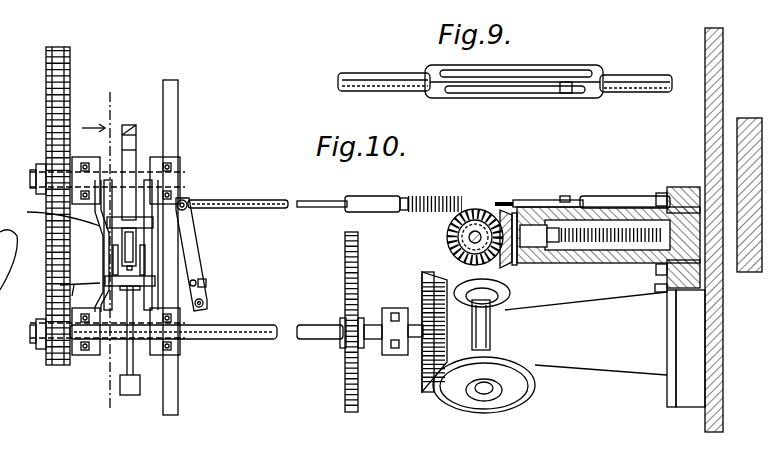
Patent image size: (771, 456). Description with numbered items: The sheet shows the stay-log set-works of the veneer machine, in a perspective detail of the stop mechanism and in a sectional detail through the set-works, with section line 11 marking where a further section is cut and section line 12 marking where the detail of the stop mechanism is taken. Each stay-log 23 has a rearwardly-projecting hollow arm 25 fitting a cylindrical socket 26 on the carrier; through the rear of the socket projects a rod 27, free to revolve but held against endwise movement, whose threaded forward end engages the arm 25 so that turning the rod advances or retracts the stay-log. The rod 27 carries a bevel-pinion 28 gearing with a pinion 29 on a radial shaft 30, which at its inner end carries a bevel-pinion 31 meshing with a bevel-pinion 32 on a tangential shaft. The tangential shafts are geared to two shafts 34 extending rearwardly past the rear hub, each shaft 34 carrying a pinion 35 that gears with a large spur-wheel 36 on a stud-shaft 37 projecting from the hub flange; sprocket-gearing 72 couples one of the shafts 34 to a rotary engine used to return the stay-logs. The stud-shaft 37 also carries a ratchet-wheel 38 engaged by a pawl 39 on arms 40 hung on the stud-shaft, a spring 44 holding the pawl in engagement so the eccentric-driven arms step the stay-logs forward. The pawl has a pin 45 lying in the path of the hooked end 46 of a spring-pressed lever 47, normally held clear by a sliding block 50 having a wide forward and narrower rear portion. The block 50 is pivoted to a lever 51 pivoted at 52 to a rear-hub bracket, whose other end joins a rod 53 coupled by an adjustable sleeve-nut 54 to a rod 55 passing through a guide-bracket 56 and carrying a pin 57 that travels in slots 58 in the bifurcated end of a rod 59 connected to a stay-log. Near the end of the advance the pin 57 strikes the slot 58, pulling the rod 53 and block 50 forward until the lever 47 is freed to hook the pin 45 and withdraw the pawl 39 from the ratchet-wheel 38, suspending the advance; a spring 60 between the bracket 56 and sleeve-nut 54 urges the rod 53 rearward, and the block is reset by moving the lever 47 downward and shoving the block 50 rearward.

In FIG. 10, the section line 11 is at (102, 257).
In FIG. 10, the section line 12 is at (208, 283).
In FIG. 10, the stay-log 23 is at (748, 118).
In FIG. 10, the hollow arm 25 is at (724, 272).
In FIG. 10, the socket 26 is at (606, 263).
In FIG. 10, the rod 27 is at (526, 263).
In FIG. 10, the bevel-pinion 28 is at (518, 210).
In FIG. 10, the pinion 29 is at (465, 233).
In FIG. 10, the radial shaft 30 is at (470, 243).
In FIG. 10, the bevel-pinion 31 is at (454, 255).
In FIG. 10, the bevel-pinion 32 is at (450, 262).
In FIG. 10, the shaft 34 is at (256, 339).
In FIG. 10, the pinion 35 is at (47, 362).
In FIG. 10, the spur-wheel 36 is at (46, 103).
In FIG. 10, the stud-shaft 37 is at (192, 247).
In FIG. 10, the ratchet-wheel 38 is at (135, 128).
In FIG. 10, the pawl 39 is at (132, 216).
In FIG. 10, the arms 40 is at (150, 236).
In FIG. 10, the spring 44 is at (153, 247).
In FIG. 10, the pin 45 is at (50, 210).
In FIG. 10, the hooked end 46 is at (155, 254).
In FIG. 10, the lever 47 is at (125, 305).
In FIG. 10, the sliding block 50 is at (60, 285).
In FIG. 10, the lever 51 is at (193, 240).
In FIG. 10, the pivot 52 is at (206, 304).
In FIG. 10, the rod 53 is at (263, 200).
In FIG. 10, the sleeve-nut 54 is at (366, 197).
In FIG. 9, the rod 55 is at (407, 89).
In FIG. 10, the rod 55 is at (500, 203).
In FIG. 10, the guide-bracket 56 is at (484, 200).
In FIG. 9, the pin 57 is at (567, 93).
In FIG. 10, the pin 57 is at (566, 198).
In FIG. 9, the slots 58 is at (472, 87).
In FIG. 9, the rod 59 is at (652, 91).
In FIG. 10, the rod 59 is at (633, 198).
In FIG. 10, the spring 60 is at (436, 197).
In FIG. 10, the sprocket-gearing 72 is at (345, 302).